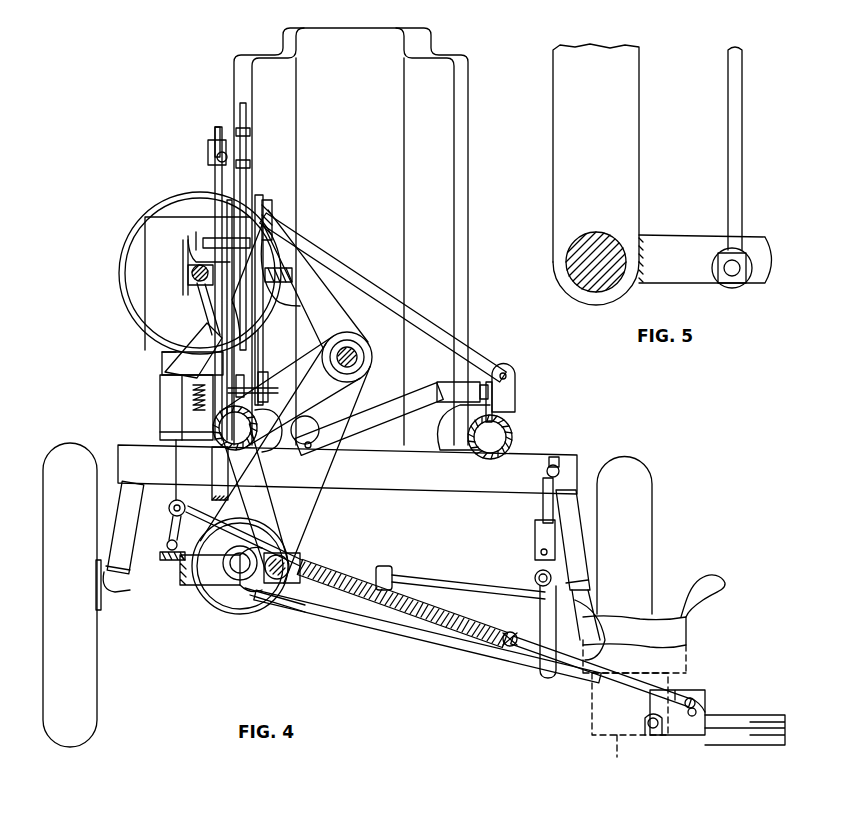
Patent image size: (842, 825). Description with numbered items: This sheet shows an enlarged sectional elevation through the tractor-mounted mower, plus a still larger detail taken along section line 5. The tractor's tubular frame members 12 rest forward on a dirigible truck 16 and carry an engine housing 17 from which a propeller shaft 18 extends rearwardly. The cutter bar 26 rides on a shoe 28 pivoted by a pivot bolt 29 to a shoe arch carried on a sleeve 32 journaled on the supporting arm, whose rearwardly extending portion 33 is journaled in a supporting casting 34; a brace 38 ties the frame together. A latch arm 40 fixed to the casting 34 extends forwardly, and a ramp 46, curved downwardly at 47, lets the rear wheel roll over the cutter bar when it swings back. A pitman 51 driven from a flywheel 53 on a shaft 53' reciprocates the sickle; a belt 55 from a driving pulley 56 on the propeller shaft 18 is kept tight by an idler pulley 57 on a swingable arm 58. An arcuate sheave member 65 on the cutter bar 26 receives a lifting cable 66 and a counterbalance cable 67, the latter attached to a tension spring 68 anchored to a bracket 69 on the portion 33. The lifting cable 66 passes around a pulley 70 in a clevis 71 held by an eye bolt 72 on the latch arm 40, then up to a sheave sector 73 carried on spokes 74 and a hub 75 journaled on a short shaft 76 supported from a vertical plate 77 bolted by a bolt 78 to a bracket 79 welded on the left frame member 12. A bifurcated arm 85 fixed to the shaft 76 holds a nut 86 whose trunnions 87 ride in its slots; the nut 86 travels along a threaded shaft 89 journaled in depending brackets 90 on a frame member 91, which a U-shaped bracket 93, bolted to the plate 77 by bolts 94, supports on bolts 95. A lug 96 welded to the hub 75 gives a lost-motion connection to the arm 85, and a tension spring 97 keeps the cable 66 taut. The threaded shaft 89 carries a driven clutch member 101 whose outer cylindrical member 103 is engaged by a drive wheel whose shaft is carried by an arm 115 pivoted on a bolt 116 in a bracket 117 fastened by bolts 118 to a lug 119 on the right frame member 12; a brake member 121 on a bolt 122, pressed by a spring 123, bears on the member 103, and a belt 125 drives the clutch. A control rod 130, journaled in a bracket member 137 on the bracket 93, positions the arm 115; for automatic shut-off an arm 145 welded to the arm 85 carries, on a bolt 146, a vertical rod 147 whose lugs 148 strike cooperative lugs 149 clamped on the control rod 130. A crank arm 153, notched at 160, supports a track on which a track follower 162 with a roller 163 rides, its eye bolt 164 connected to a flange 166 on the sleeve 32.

In FIG. 4, the lever 5 is at (236, 306).
In FIG. 4, the tubular frame members 12 is at (244, 446).
In FIG. 4, the front dirigible truck 16 is at (83, 428).
In FIG. 4, the engine housing 17 is at (362, 93).
In FIG. 4, the propeller shaft 18 is at (362, 353).
In FIG. 4, the cutter bar 26 is at (749, 747).
In FIG. 4, the shoe 28 is at (630, 727).
In FIG. 4, the pivot bolt 29 is at (653, 728).
In FIG. 4, the sleeve 32 is at (590, 608).
In FIG. 4, the rearwardly extending portion 33 is at (266, 584).
In FIG. 4, the supporting casting 34 is at (230, 608).
In FIG. 4, the brace 38 is at (212, 481).
In FIG. 4, the latch arm 40 is at (182, 580).
In FIG. 4, the ramp 46 is at (718, 578).
In FIG. 4, the downwardly curved rear end 47 is at (670, 628).
In FIG. 4, the pitman 51 is at (372, 625).
In FIG. 4, the flywheel 53 is at (250, 536).
In FIG. 4, the shaft 53' is at (265, 542).
In FIG. 4, the belt 55 is at (318, 500).
In FIG. 4, the driving pulley 56 is at (368, 365).
In FIG. 4, the idler pulley 57 is at (300, 423).
In FIG. 4, the arm 58 is at (380, 424).
In FIG. 4, the arcuate sheave member 65 is at (698, 702).
In FIG. 4, the lifting cable 66 is at (537, 638).
In FIG. 4, the counterbalance cable 67 is at (530, 652).
In FIG. 4, the tension spring 68 is at (452, 638).
In FIG. 4, the bracket 69 is at (272, 612).
In FIG. 4, the pulley 70 is at (169, 509).
In FIG. 4, the clevis 71 is at (171, 527).
In FIG. 4, the eye bolt 72 is at (162, 549).
In FIG. 4, the sheave sector 73 is at (160, 398).
In FIG. 4, the spokes 74 is at (182, 410).
In FIG. 4, the hub 75 is at (162, 366).
In FIG. 4, the short transversely disposed shaft 76 is at (160, 356).
In FIG. 5, the short transversely disposed shaft 76 is at (596, 235).
In FIG. 4, the vertically extending plate 77 is at (262, 358).
In FIG. 4, the bolt 78 is at (270, 391).
In FIG. 4, the rigid bracket 79 is at (258, 382).
In FIG. 4, the bifurcated arm 85 is at (210, 297).
In FIG. 5, the bifurcated arm 85 is at (628, 120).
In FIG. 4, the nut 86 is at (192, 276).
In FIG. 4, the trunnions 87 is at (180, 262).
In FIG. 4, the threaded shaft 89 is at (188, 266).
In FIG. 4, the depending brackets 90 is at (158, 230).
In FIG. 4, the frame member 91 is at (196, 250).
In FIG. 4, the U-shaped bracket 93 is at (275, 220).
In FIG. 4, the bolts 94 is at (274, 233).
In FIG. 4, the bolts 95 is at (212, 238).
In FIG. 4, the lug 96 is at (195, 346).
In FIG. 4, the tension spring 97 is at (247, 429).
In FIG. 4, the driven clutch member 101 is at (156, 203).
In FIG. 4, the outer cylindrical member 103 is at (166, 198).
In FIG. 4, the arm 115 is at (352, 262).
In FIG. 4, the bolt 116 is at (506, 372).
In FIG. 4, the bracket 117 is at (516, 386).
In FIG. 4, the bolts 118 is at (492, 393).
In FIG. 4, the upwardly projecting lug 119 is at (478, 420).
In FIG. 4, the brake member 121 is at (300, 258).
In FIG. 4, the bolt 122 is at (276, 304).
In FIG. 4, the spring 123 is at (290, 282).
In FIG. 4, the power transmitting belt 125 is at (324, 300).
In FIG. 4, the control rod 130 is at (218, 137).
In FIG. 4, the upwardly extending bracket member 137 is at (245, 198).
In FIG. 5, the arm 145 is at (682, 245).
In FIG. 5, the bolt 146 is at (740, 252).
In FIG. 4, the vertically extending rod 147 is at (247, 110).
In FIG. 5, the vertically extending rod 147 is at (742, 126).
In FIG. 4, the lugs 148 is at (250, 132).
In FIG. 4, the cooperative lugs 149 is at (218, 140).
In FIG. 4, the crank arm 153 is at (560, 470).
In FIG. 4, the notch 160 is at (541, 552).
In FIG. 4, the track follower 162 is at (536, 543).
In FIG. 4, the roller 163 is at (543, 528).
In FIG. 4, the eye bolt 164 is at (551, 577).
In FIG. 4, the upwardly extending flange 166 is at (535, 580).